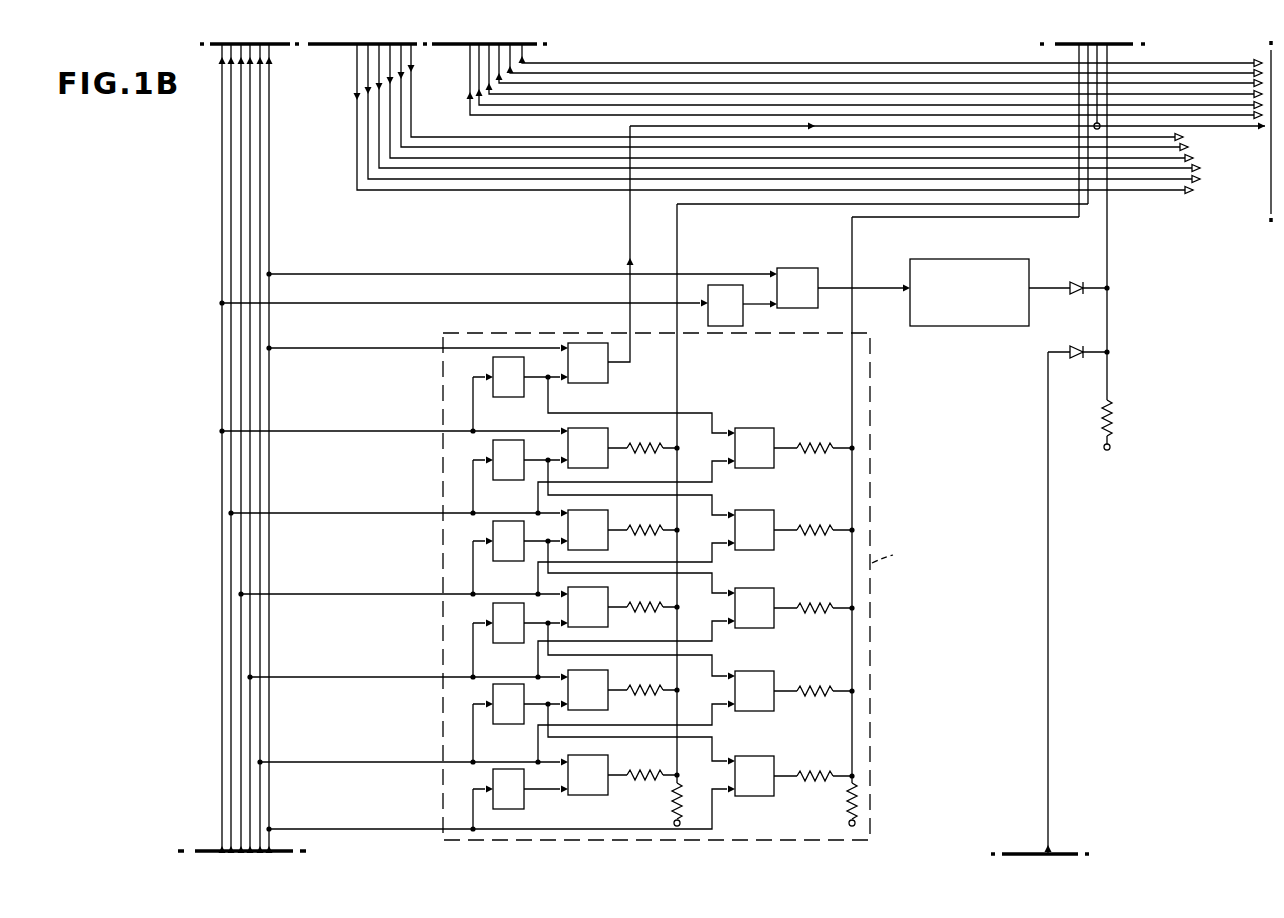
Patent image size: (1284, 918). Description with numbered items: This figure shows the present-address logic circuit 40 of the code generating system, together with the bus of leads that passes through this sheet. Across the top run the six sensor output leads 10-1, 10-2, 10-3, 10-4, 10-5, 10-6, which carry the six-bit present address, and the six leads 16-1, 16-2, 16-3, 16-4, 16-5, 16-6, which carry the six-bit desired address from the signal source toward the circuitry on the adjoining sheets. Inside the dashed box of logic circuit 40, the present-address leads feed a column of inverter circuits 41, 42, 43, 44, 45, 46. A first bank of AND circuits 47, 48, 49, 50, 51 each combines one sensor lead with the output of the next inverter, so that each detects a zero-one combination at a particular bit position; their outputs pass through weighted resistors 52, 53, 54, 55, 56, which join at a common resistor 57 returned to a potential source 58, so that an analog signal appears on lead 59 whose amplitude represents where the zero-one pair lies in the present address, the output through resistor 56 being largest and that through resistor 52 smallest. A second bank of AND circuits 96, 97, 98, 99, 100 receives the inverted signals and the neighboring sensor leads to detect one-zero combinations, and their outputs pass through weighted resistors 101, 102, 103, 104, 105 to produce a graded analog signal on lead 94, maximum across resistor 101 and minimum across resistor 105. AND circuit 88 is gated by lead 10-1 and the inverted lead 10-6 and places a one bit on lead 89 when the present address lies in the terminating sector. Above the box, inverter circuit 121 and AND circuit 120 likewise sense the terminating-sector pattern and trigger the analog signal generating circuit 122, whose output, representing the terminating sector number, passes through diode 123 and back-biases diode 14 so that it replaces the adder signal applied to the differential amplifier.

The lead 10-1 is at (269, 87).
The lead 10-2 is at (260, 135).
The lead 10-3 is at (250, 188).
The lead 10-4 is at (241, 195).
The lead 10-5 is at (231, 145).
The lead 10-6 is at (222, 86).
The lead 16-1 is at (623, 63).
The lead 16-2 is at (580, 73).
The lead 16-3 is at (535, 87).
The lead 16-4 is at (503, 100).
The lead 16-5 is at (480, 98).
The lead 16-6 is at (470, 80).
The lead 89 is at (630, 233).
The lead 59 is at (677, 233).
The lead 94 is at (852, 233).
The inverter circuit 121 is at (729, 284).
The AND circuit 120 is at (790, 268).
The analog signal generating circuit 122 is at (931, 259).
The diode 123 is at (1072, 281).
The diode 14 is at (1073, 345).
The AND circuit 88 is at (609, 382).
The inverter circuit 41 is at (500, 397).
The inverter circuit 42 is at (500, 480).
The inverter circuit 43 is at (500, 561).
The inverter circuit 44 is at (500, 643).
The inverter circuit 45 is at (500, 724).
The inverter circuit 46 is at (497, 797).
The AND circuit 47 is at (607, 462).
The AND circuit 48 is at (607, 544).
The AND circuit 49 is at (607, 621).
The AND circuit 50 is at (607, 704).
The AND circuit 51 is at (600, 796).
The weighted resistor 52 is at (670, 452).
The weighted resistor 53 is at (670, 534).
The weighted resistor 54 is at (670, 611).
The weighted resistor 55 is at (670, 694).
The weighted resistor 56 is at (661, 768).
The resistor 57 is at (680, 811).
The potential source 58 is at (674, 822).
The AND circuit 96 is at (754, 428).
The AND circuit 97 is at (754, 510).
The AND circuit 98 is at (754, 588).
The AND circuit 99 is at (754, 671).
The AND circuit 100 is at (752, 761).
The weighted resistor 101 is at (822, 442).
The weighted resistor 102 is at (822, 524).
The weighted resistor 103 is at (822, 602).
The weighted resistor 104 is at (822, 682).
The weighted resistor 105 is at (822, 764).
The logic circuit 40 is at (872, 742).